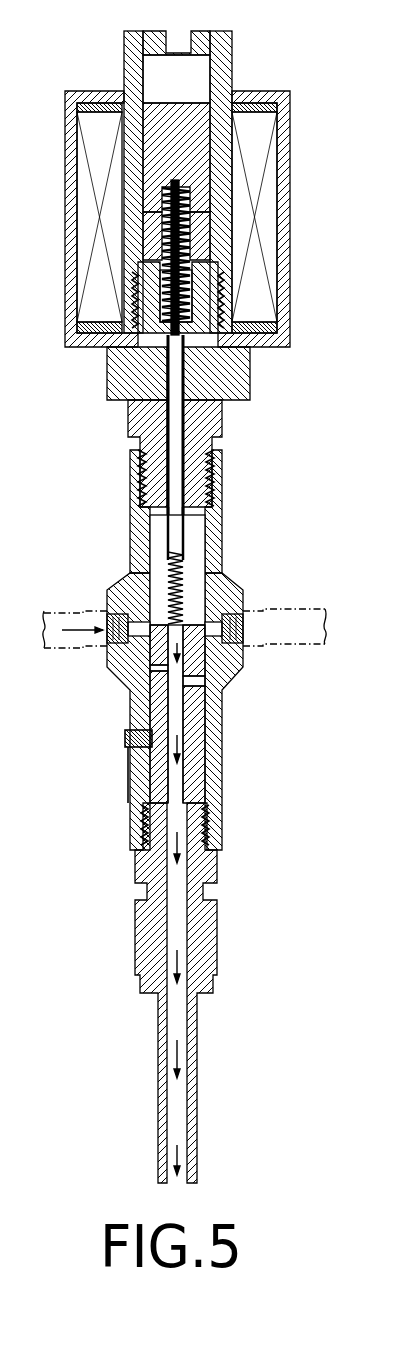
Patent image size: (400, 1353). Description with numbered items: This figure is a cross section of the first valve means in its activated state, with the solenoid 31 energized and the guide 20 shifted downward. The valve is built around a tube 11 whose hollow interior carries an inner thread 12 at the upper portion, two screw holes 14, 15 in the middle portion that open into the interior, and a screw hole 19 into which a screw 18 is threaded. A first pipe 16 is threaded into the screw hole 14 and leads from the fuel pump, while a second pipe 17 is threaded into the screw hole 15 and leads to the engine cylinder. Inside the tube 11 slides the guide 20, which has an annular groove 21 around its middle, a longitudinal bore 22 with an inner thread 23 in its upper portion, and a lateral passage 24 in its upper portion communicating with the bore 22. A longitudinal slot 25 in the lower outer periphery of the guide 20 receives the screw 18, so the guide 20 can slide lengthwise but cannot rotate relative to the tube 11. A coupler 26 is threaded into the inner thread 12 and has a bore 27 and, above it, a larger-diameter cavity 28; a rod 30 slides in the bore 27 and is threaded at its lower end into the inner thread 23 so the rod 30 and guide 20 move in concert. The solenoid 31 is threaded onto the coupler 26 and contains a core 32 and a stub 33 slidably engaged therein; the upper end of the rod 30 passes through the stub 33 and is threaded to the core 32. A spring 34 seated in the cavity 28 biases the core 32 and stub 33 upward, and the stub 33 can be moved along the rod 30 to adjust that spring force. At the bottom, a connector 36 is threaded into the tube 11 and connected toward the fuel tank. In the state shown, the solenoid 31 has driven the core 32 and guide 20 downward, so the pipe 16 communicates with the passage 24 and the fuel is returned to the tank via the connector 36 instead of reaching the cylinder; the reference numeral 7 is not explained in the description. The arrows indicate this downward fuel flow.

The valve 7 is at (53, 582).
The tube 11 is at (222, 750).
The inner thread 12 is at (137, 488).
The screw hole 14 is at (107, 600).
The screw hole 15 is at (250, 614).
The first pipe 16 is at (46, 611).
The second pipe 17 is at (300, 612).
The screw 18 is at (130, 740).
The screw hole 19 is at (135, 750).
The guide 20 is at (197, 787).
The annular groove 21 is at (227, 683).
The bore 22 is at (173, 712).
The inner thread 23 is at (152, 590).
The passage 24 is at (117, 681).
The slot 25 is at (130, 823).
The coupler 26 is at (222, 427).
The bore 27 is at (193, 380).
The cavity 28 is at (193, 289).
The rod 30 is at (178, 533).
The solenoid 31 is at (283, 176).
The core 32 is at (200, 135).
The stub 33 is at (150, 233).
The spring 34 is at (163, 342).
The connector 36 is at (210, 942).